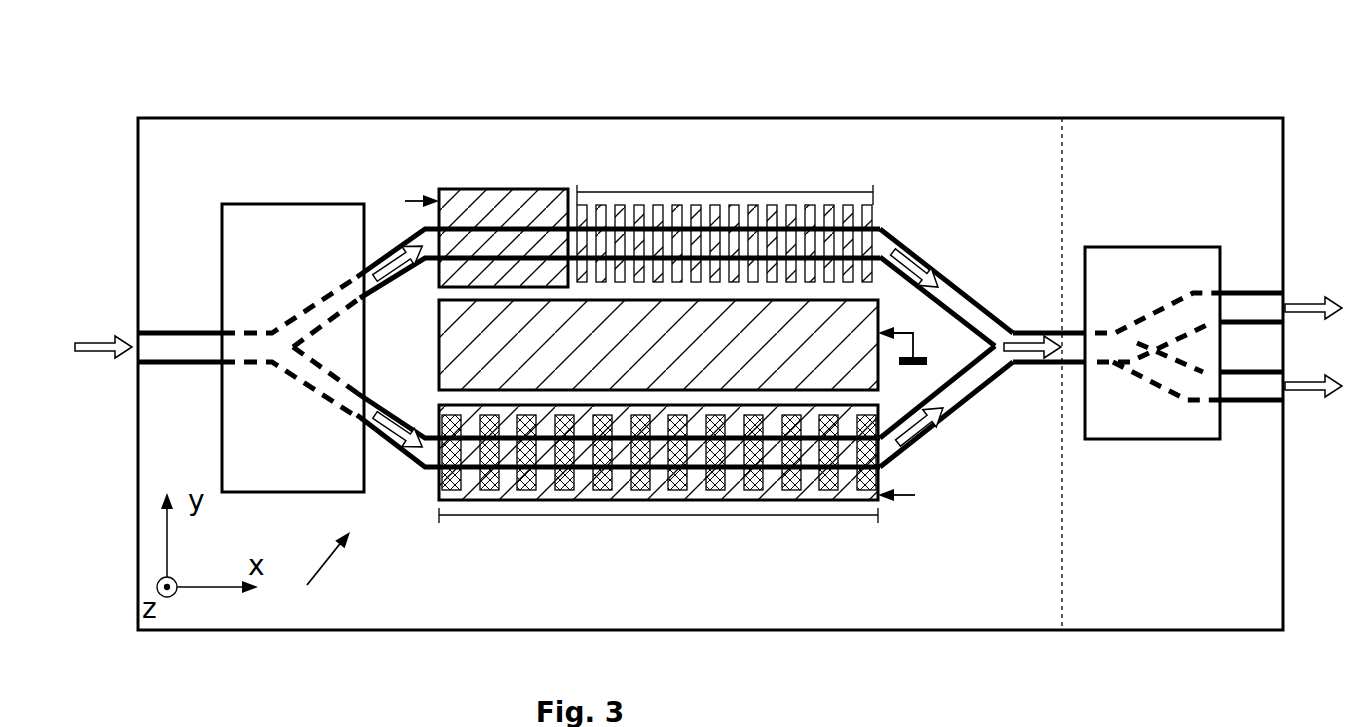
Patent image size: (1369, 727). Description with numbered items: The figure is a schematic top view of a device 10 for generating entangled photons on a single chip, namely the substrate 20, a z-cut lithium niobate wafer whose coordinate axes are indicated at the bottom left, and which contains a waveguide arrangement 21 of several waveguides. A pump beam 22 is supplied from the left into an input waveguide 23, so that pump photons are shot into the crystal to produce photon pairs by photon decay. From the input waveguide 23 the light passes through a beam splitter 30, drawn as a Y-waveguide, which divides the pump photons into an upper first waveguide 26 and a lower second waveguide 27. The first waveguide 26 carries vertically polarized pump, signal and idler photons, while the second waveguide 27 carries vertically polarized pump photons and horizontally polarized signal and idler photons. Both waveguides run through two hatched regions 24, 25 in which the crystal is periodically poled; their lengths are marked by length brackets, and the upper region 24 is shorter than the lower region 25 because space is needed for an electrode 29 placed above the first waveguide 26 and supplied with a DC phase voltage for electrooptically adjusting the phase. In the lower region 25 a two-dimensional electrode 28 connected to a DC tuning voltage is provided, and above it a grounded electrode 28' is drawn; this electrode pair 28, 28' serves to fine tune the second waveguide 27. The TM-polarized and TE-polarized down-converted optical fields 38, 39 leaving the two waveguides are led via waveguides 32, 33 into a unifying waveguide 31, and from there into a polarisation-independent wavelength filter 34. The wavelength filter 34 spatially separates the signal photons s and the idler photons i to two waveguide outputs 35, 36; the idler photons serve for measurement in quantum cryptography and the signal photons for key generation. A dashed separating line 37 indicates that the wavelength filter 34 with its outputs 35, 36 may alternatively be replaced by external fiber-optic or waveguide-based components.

The optical device 10 is at (520, 96).
The substrate 20 is at (857, 116).
The waveguide arrangement 21 is at (318, 579).
The pump beam 22 is at (104, 344).
The input waveguide 23 is at (189, 343).
The periodically poled region 24 is at (867, 211).
The periodically poled region 25 is at (864, 485).
The first waveguide 26 is at (427, 249).
The second waveguide 27 is at (424, 445).
The electrode 28 is at (671, 483).
The electrode 28' is at (652, 345).
The electrode 29 is at (446, 190).
The beam splitter 30 is at (304, 216).
The unifying waveguide 31 is at (1036, 334).
The waveguide 32 is at (976, 294).
The waveguide 33 is at (986, 394).
The wavelength filter 34 is at (1159, 270).
The waveguide output 35 is at (1259, 304).
The waveguide output 36 is at (1259, 391).
The dashed separating line 37 is at (1065, 513).
The down-converted optical field 38 is at (914, 262).
The down-converted optical field 39 is at (920, 430).